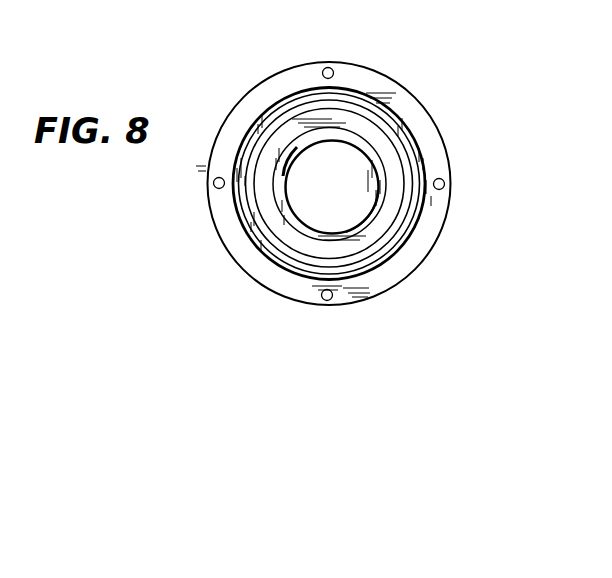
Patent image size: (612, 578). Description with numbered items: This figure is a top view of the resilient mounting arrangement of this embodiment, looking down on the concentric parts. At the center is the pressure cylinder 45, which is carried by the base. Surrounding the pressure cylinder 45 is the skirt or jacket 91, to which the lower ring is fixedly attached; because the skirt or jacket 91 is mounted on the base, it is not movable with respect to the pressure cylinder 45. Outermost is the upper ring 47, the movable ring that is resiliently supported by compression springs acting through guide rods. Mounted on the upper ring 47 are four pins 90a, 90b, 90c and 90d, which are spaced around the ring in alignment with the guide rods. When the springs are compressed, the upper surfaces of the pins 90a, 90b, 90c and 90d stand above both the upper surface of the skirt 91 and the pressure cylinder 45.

The pressure cylinder 45 is at (291, 191).
The upper ring 47 is at (424, 259).
The pin 90a is at (213, 180).
The pin 90b is at (322, 300).
The pin 90c is at (444, 188).
The pin 90d is at (322, 70).
The skirt or jacket 91 is at (394, 105).